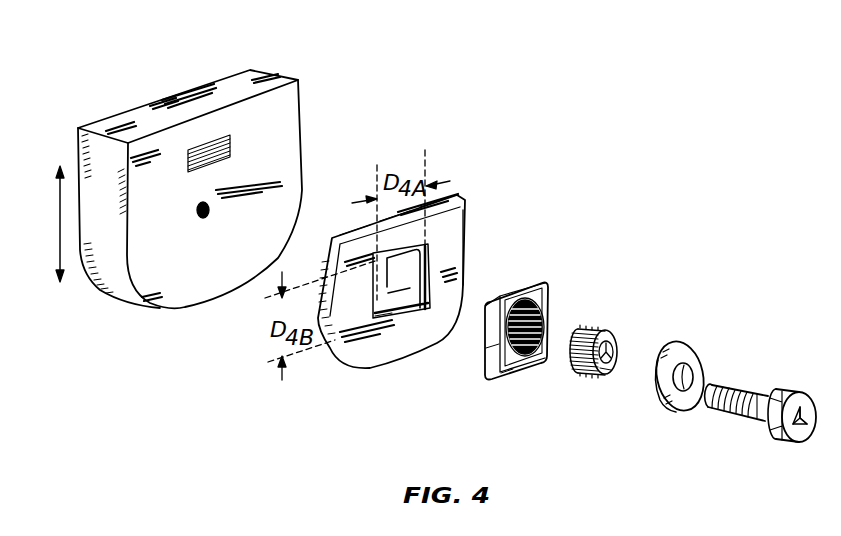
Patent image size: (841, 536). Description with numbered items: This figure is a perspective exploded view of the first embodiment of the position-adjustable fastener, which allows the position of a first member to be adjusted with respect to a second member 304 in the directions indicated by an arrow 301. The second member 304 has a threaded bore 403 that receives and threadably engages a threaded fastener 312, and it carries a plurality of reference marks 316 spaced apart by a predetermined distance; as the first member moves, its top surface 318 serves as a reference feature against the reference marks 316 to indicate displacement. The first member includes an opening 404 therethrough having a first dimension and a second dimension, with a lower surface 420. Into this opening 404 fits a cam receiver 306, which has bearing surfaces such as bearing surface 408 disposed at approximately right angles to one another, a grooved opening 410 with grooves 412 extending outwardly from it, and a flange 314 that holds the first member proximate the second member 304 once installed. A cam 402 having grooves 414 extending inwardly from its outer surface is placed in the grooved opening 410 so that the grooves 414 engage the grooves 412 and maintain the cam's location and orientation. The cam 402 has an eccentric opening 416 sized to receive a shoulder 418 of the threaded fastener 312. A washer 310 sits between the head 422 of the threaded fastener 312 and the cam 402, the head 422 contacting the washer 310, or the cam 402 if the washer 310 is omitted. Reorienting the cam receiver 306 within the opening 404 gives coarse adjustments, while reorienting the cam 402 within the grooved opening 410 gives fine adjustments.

The arrow 301 is at (58, 217).
The second member 304 is at (150, 300).
The cam receiver 306 is at (507, 374).
The washer 310 is at (703, 366).
The threaded fastener 312 is at (710, 404).
The flange 314 is at (535, 283).
The reference marks 316 is at (211, 140).
The top surface 318 is at (460, 196).
The cam 402 is at (615, 350).
The threaded bore 403 is at (206, 216).
The opening 404 is at (430, 275).
The bearing surface 408 is at (493, 346).
The grooved opening 410 is at (528, 358).
The grooves 412 is at (541, 314).
The grooves 414 is at (598, 332).
The opening 416 is at (609, 365).
The shoulder 418 is at (419, 257).
The lower surface 420 is at (387, 340).
The head 422 is at (807, 437).